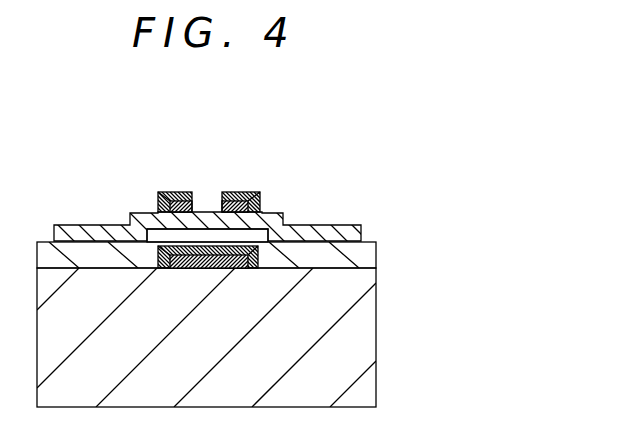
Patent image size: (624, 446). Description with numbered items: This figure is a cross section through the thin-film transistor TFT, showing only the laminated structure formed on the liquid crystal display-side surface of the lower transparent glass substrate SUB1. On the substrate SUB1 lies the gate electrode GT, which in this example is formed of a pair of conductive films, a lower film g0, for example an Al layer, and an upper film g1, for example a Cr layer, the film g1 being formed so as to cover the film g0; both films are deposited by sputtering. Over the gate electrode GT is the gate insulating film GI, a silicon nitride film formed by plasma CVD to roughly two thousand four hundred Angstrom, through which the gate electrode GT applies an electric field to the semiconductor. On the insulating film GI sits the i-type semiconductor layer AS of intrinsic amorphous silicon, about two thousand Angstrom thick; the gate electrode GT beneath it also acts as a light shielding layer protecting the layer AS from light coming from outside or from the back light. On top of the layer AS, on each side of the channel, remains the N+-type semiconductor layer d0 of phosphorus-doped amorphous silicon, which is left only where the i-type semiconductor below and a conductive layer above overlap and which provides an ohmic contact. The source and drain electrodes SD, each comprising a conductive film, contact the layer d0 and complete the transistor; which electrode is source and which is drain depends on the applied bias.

The thin-film transistor TFT is at (210, 157).
The lower transparent glass substrate SUB1 is at (362, 323).
The gate insulating film GI is at (362, 253).
The gate electrode GT is at (229, 288).
The conductive film g0 is at (224, 268).
The conductive film g1 is at (247, 268).
The i-type semiconductor layer AS is at (221, 194).
The N+-type semiconductor layer d0 is at (199, 194).
The source and drain electrodes SD is at (82, 230).